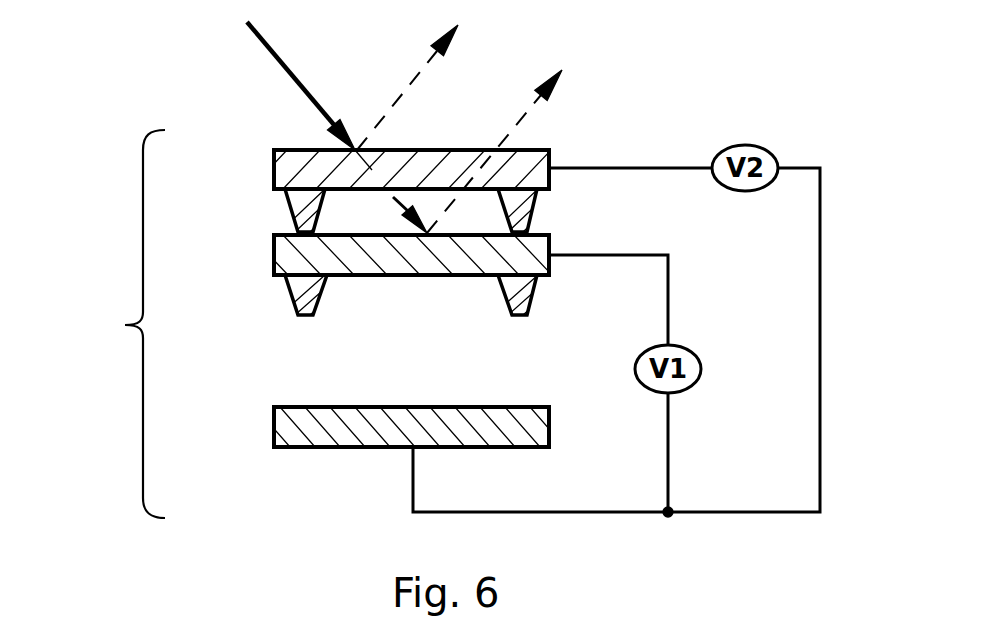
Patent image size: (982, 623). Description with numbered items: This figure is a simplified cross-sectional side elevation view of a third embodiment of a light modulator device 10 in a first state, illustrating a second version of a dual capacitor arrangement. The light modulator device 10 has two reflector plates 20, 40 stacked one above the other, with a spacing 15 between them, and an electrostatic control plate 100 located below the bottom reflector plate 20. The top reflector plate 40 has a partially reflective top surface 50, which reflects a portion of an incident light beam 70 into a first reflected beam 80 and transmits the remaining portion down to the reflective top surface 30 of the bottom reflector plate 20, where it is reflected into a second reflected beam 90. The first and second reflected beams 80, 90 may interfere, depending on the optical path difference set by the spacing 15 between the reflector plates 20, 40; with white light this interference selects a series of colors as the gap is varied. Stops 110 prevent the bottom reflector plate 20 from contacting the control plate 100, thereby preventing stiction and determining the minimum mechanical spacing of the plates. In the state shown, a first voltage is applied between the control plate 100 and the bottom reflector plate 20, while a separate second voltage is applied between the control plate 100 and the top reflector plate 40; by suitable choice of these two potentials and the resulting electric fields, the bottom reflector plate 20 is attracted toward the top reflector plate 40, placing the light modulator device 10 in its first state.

The light modulator device 10 is at (126, 325).
The spacing between reflector plates 15 is at (373, 225).
The reflector plate 20 is at (273, 256).
The reflective top surface 30 is at (541, 232).
The reflector plate 40 is at (273, 161).
The partially reflective top surface 50 is at (298, 150).
The incident light beam 70 is at (268, 47).
The first reflected beam 80 is at (423, 70).
The second reflected beam 90 is at (525, 117).
The electrostatic control plate 100 is at (323, 407).
The stops 110 is at (293, 207).